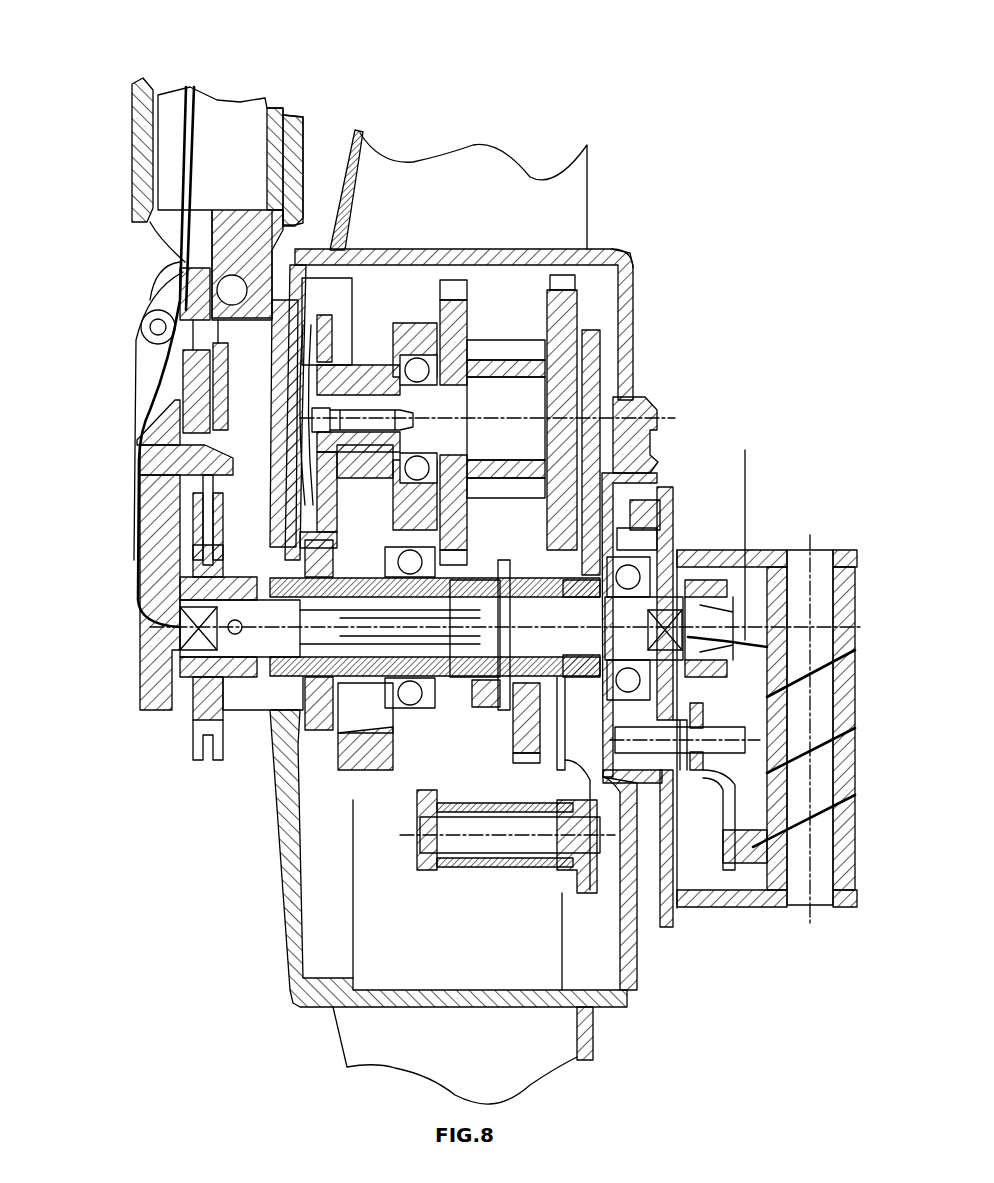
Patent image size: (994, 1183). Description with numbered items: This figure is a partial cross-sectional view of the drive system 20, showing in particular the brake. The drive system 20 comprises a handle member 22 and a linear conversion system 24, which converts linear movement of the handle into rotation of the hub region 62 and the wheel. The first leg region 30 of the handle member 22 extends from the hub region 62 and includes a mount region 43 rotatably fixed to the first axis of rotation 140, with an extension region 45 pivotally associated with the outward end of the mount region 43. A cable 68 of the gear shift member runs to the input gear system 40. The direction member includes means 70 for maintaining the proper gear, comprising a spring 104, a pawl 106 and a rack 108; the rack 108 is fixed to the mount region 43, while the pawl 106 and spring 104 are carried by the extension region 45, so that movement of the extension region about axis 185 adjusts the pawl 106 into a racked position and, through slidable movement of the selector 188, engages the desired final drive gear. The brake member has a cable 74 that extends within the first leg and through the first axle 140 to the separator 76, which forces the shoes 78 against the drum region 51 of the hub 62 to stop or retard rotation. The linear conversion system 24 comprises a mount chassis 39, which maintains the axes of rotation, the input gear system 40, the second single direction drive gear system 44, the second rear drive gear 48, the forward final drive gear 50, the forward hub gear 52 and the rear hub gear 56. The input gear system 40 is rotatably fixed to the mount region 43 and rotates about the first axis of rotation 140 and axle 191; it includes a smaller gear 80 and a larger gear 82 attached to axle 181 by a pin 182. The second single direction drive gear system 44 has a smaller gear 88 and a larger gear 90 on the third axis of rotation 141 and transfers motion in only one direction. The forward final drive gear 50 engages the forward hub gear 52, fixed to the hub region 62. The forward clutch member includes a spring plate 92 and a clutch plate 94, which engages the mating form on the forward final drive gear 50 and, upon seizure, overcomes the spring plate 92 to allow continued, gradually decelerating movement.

The drive system 20 is at (683, 353).
The handle member 22 is at (133, 225).
The linear conversion system 24 is at (255, 870).
The first leg region 30 is at (118, 392).
The mount chassis 39 is at (588, 895).
The input gear system 40 is at (520, 725).
The mount region 43 is at (138, 402).
The second single direction drive gear system 44 is at (470, 295).
The extension region 45 is at (133, 150).
The second rear drive gear 48 is at (600, 303).
The forward final drive gear 50 is at (330, 330).
The drum region 51 is at (662, 510).
The forward hub gear 52 is at (275, 748).
The rear hub gear 56 is at (360, 772).
The hub region 62 is at (622, 252).
The cable 68 is at (200, 92).
The means for maintaining the proper gear 70 is at (215, 432).
The cable 74 is at (178, 87).
The separator 76 is at (855, 770).
The shoes 78 is at (660, 780).
The smaller gear 80 is at (478, 720).
The larger gear 82 is at (530, 770).
The smaller gear 88 is at (535, 340).
The larger gear 90 is at (440, 348).
The spring plate 92 is at (280, 390).
The clutch plate 94 is at (335, 360).
The spring 104 is at (140, 335).
The pawl 106 is at (205, 420).
The rack 108 is at (210, 500).
The first axis of rotation 140 is at (756, 560).
The third axis of rotation 141 is at (640, 400).
The axle 181 is at (555, 720).
The pin 182 is at (498, 680).
The axis 185 is at (183, 305).
The selector 188 is at (140, 530).
The axle 191 is at (745, 450).